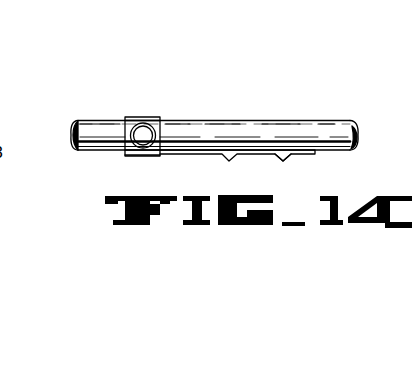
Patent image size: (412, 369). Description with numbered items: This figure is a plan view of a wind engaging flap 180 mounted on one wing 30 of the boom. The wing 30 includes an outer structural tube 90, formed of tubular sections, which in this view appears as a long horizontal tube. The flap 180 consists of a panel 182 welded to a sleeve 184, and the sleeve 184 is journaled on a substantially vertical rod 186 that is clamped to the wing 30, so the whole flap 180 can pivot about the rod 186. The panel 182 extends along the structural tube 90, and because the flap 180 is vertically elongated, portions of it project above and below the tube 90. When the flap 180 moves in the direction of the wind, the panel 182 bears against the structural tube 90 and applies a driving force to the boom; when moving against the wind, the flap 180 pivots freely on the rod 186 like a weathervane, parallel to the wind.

The wing 30 is at (312, 119).
The outer structural tube 90 is at (243, 133).
The wind engaging flap 180 is at (312, 155).
The panel 182 is at (193, 156).
The sleeve 184 is at (142, 121).
The rod 186 is at (142, 142).